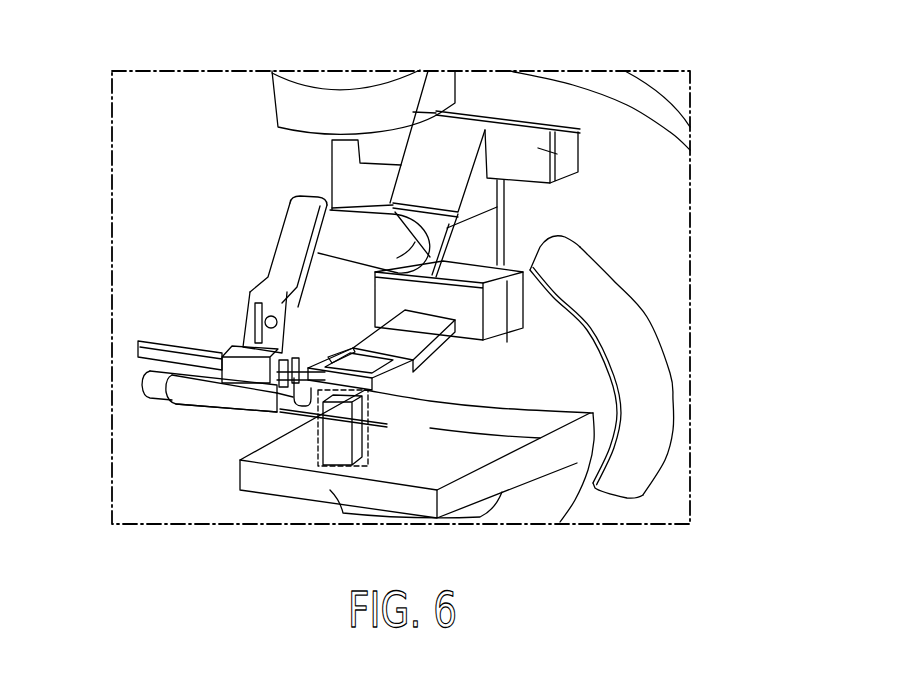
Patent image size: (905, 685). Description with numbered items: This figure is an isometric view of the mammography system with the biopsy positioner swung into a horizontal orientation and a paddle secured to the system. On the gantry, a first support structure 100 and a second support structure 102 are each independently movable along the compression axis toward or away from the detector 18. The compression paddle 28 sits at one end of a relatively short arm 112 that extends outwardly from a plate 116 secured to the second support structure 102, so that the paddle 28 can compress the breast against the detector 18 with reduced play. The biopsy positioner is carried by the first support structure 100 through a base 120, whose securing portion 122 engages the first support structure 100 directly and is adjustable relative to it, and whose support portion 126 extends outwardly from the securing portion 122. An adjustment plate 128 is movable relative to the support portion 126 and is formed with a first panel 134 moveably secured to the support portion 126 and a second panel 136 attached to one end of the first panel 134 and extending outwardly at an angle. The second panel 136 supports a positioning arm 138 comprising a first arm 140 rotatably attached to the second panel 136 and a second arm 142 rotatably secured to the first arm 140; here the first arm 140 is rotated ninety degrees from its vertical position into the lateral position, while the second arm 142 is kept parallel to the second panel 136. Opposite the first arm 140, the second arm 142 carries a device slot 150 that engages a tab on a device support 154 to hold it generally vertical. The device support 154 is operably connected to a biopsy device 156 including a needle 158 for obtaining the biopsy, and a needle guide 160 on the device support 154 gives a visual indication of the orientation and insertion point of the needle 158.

The detector 18 is at (278, 487).
The compression paddle 28 is at (360, 377).
The first support structure 100 is at (578, 172).
The second support structure 102 is at (553, 318).
The arm 112 is at (437, 342).
The plate 116 is at (467, 335).
The base 120 is at (521, 114).
The securing portion 122 is at (537, 149).
The support portion 126 is at (430, 155).
The adjustment plate 128 is at (491, 212).
The first panel 134 is at (465, 222).
The second panel 136 is at (390, 212).
The positioning arm 138 is at (286, 191).
The first arm 140 is at (335, 224).
The second arm 142 is at (280, 256).
The device slot 150 is at (253, 323).
The device support 154 is at (154, 341).
The biopsy device 156 is at (212, 406).
The needle 158 is at (298, 413).
The needle guide 160 is at (300, 376).